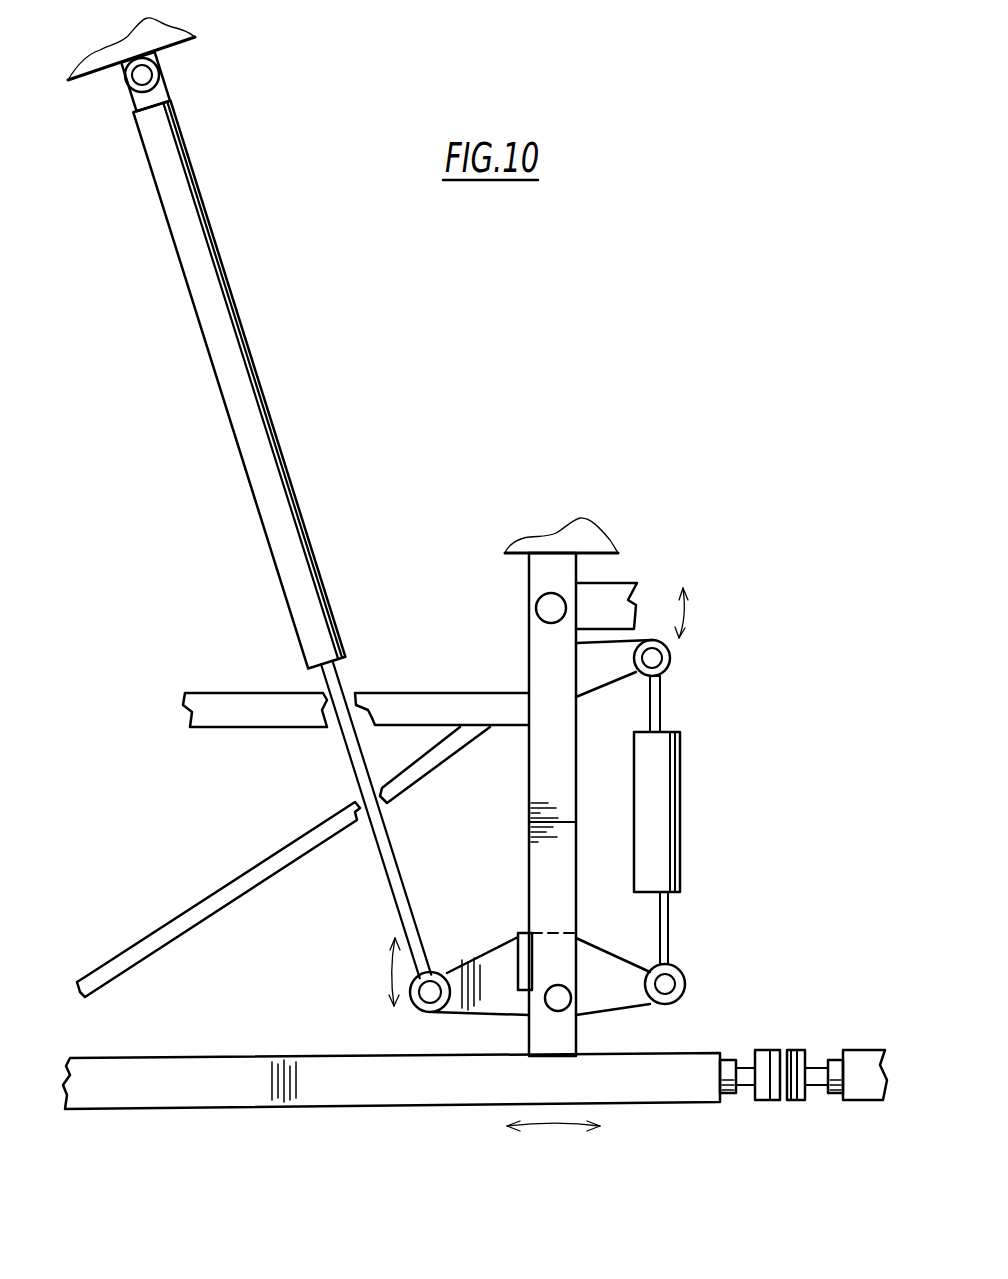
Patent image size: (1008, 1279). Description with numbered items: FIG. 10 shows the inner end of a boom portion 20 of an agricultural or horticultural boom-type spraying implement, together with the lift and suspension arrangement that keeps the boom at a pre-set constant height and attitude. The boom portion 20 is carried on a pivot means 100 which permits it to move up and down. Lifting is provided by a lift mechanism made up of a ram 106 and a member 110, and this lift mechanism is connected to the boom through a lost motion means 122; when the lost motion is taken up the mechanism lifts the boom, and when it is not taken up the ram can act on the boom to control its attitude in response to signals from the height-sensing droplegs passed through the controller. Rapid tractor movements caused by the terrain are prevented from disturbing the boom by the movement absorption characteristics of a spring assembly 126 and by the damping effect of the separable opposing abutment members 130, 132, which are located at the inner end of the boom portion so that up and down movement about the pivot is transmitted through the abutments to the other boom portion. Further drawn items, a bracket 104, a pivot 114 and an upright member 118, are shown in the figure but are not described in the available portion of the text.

The boom portion 20 is at (391, 1048).
The pivot means 100 is at (474, 607).
The mounting bracket 104 is at (343, 285).
The ram 106 is at (276, 515).
The lift mechanism 110 is at (476, 988).
The pivot pin 114 is at (657, 992).
The upright column 118 is at (638, 804).
The lost motion means 122 is at (504, 895).
The spring assembly 126 is at (703, 820).
The abutment member 130 is at (742, 1103).
The abutment member 132 is at (846, 1103).